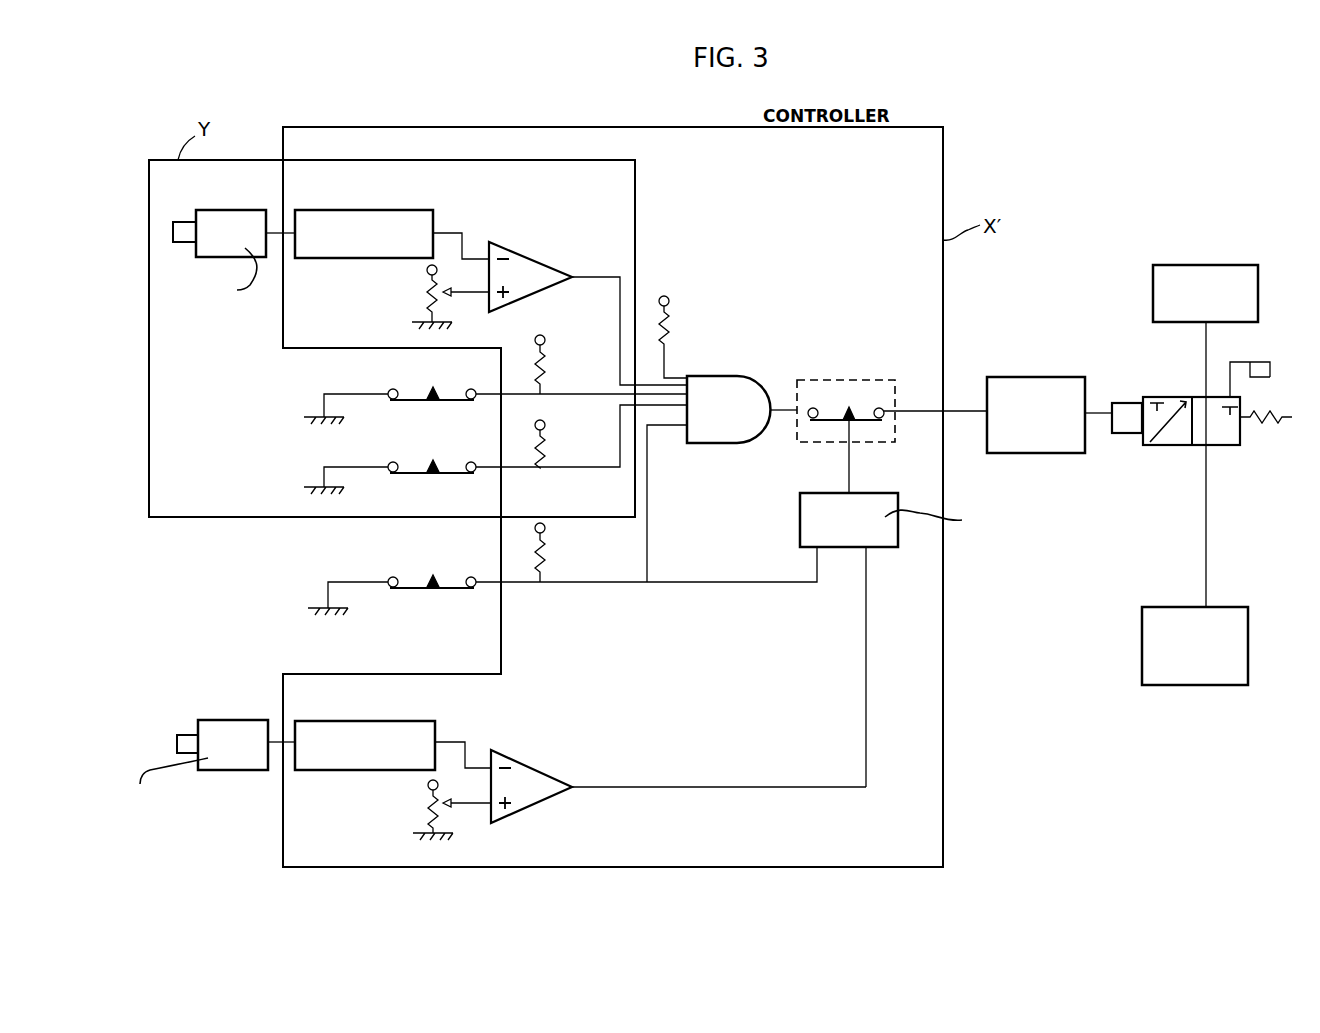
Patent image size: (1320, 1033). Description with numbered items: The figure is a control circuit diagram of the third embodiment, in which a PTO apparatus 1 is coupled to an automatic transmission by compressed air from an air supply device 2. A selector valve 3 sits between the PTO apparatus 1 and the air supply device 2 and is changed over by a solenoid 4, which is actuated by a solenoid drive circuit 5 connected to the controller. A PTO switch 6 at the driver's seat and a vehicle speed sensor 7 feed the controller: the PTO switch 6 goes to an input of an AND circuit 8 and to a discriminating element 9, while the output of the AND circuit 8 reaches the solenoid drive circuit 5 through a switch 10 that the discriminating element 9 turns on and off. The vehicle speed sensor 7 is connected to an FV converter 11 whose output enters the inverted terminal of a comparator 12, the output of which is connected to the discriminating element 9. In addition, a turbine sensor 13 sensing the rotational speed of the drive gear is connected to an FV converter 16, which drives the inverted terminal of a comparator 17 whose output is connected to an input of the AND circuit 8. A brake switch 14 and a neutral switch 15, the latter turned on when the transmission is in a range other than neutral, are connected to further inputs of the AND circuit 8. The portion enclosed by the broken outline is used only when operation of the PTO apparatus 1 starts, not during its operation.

The PTO apparatus 1 is at (1248, 645).
The air supply device 2 is at (1258, 293).
The selector valve 3 is at (1163, 397).
The solenoid 4 is at (1126, 403).
The solenoid drive circuit 5 is at (1028, 377).
The PTO switch 6 is at (412, 570).
The vehicle speed sensor 7 is at (228, 720).
The AND circuit 8 is at (714, 376).
The discriminating element 9 is at (800, 510).
The switch 10 is at (843, 380).
The FV converter 11 is at (382, 721).
The comparator 12 is at (527, 766).
The turbine sensor 13 is at (222, 210).
The brake switch 14 is at (412, 388).
The neutral switch 15 is at (412, 462).
The FV converter 16 is at (380, 210).
The comparator 17 is at (529, 268).